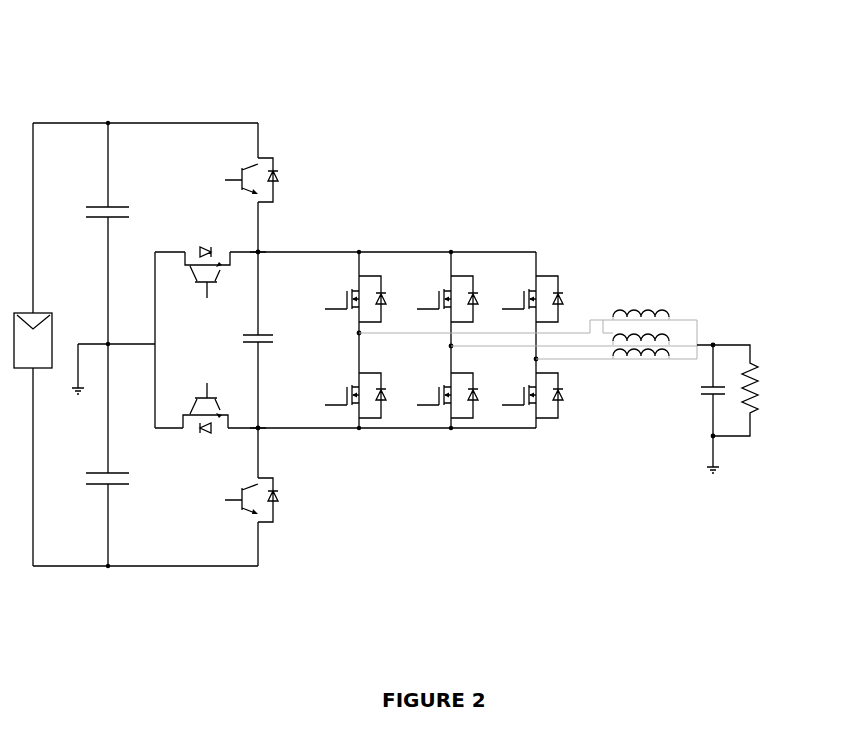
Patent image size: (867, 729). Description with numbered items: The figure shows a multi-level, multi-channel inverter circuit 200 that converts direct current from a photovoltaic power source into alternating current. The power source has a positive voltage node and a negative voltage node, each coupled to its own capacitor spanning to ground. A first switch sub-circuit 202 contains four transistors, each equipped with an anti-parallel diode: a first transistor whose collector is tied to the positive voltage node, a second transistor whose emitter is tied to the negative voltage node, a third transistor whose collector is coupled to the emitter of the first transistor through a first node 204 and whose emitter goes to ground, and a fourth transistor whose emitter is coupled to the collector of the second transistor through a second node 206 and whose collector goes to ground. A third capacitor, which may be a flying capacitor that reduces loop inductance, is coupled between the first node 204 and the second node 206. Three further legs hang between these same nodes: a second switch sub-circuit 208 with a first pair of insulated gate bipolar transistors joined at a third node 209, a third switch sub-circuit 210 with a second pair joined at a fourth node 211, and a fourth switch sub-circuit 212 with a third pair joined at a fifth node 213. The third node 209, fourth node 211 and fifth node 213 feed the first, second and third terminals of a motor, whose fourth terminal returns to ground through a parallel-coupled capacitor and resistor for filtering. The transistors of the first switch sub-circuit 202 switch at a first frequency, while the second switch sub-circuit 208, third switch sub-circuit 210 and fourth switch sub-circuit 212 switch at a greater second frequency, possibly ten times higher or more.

The multi-level, multi-channel inverter circuit 200 is at (748, 134).
The first switch sub-circuit 202 is at (274, 96).
The first node 204 is at (259, 251).
The second node 206 is at (259, 429).
The second switch sub-circuit 208 is at (388, 238).
The third node 209 is at (359, 333).
The third switch sub-circuit 210 is at (478, 238).
The fourth node 211 is at (451, 346).
The fourth switch sub-circuit 212 is at (560, 238).
The fifth node 213 is at (536, 359).